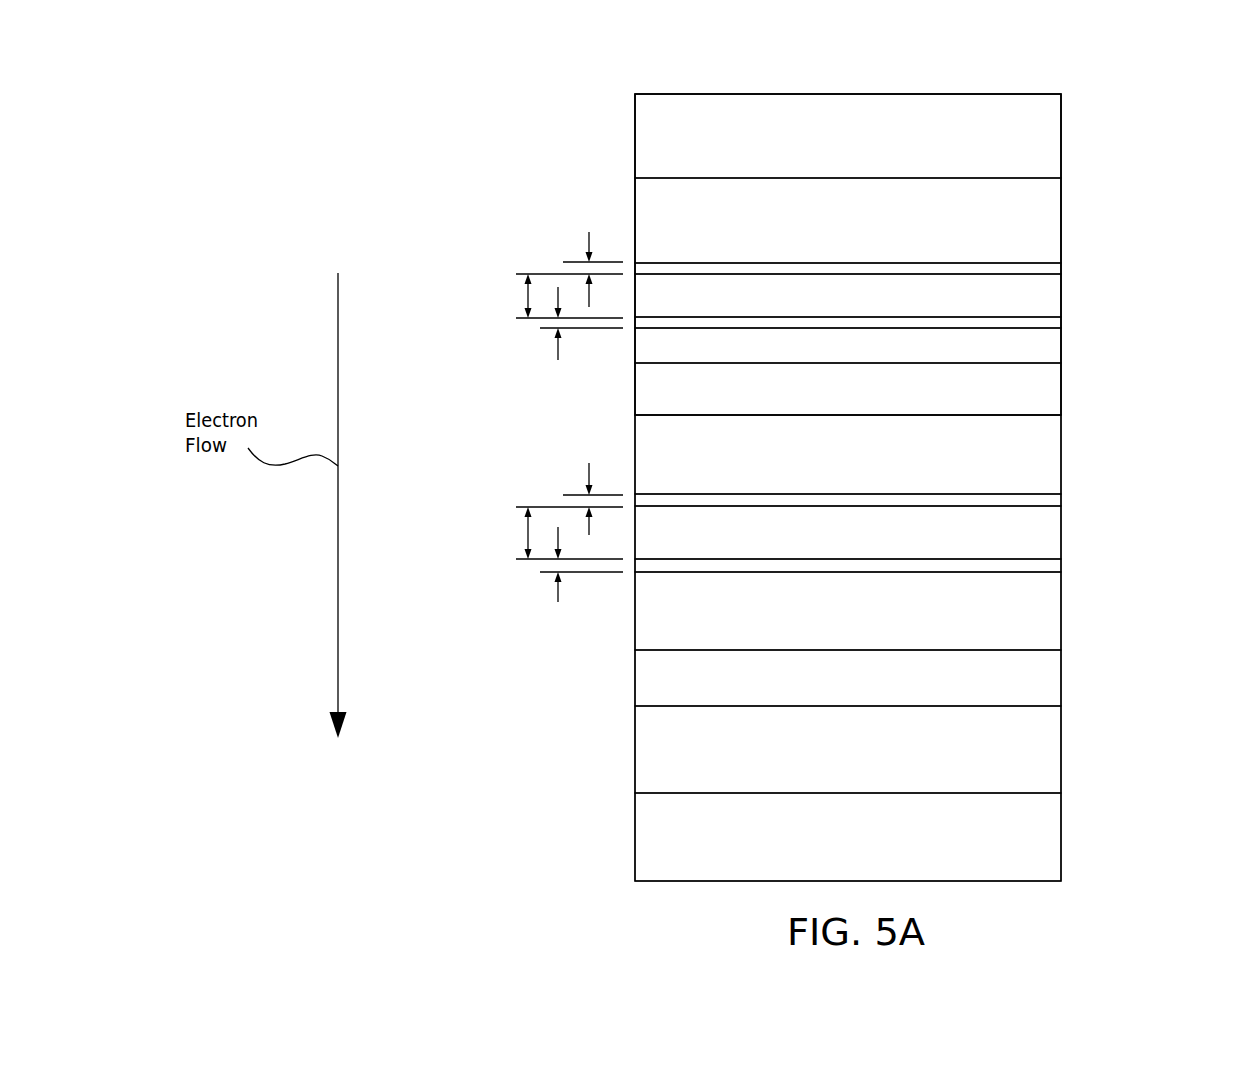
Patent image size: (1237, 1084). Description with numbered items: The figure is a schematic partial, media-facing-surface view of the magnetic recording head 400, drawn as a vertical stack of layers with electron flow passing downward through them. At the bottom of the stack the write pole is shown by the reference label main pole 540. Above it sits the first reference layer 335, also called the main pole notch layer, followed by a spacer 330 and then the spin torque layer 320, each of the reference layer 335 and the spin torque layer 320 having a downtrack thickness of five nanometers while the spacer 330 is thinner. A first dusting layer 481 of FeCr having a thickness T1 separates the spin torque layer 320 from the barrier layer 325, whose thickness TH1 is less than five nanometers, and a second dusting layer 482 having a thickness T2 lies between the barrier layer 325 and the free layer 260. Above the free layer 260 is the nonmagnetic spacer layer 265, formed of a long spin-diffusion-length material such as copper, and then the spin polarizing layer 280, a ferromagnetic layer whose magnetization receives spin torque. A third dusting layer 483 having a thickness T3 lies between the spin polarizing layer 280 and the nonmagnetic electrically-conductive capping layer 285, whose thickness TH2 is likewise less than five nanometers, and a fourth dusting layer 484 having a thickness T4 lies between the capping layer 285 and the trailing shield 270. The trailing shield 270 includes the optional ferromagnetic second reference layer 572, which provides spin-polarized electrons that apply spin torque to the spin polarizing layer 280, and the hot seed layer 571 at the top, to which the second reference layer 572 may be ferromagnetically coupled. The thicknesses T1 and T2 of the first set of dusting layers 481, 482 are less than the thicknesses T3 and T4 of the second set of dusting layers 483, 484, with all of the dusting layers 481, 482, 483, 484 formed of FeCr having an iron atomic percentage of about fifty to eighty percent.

The magnetic recording head 400 is at (286, 85).
The trailing shield 270 is at (1078, 158).
The hot seed layer 571 is at (1062, 104).
The second reference layer 572 is at (1062, 214).
The dusting layer 484 is at (1055, 268).
The capping layer 285 is at (1062, 290).
The dusting layer 483 is at (1055, 322).
The spin polarizing layer 280 is at (1062, 344).
The nonmagnetic spacer layer 265 is at (1062, 385).
The free layer 260 is at (1062, 450).
The dusting layer 482 is at (1055, 500).
The barrier layer 325 is at (1062, 532).
The dusting layer 481 is at (1055, 565).
The spin torque layer 320 is at (1062, 608).
The spacer 330 is at (1062, 679).
The reference layer 335 is at (1062, 755).
The main pole 540 is at (1062, 839).
The thickness of dusting layer 481 T1 is at (558, 592).
The thickness of dusting layer 482 T2 is at (588, 473).
The thickness of dusting layer 483 T3 is at (558, 352).
The thickness of dusting layer 484 T4 is at (587, 240).
The thickness of barrier layer TH1 is at (527, 535).
The thickness of capping layer TH2 is at (525, 297).